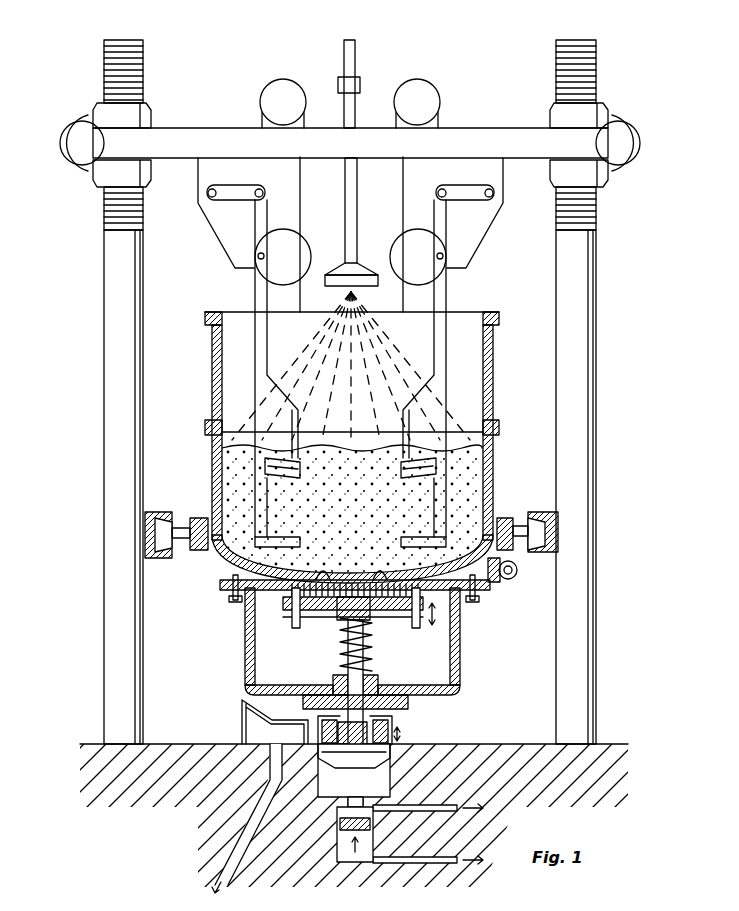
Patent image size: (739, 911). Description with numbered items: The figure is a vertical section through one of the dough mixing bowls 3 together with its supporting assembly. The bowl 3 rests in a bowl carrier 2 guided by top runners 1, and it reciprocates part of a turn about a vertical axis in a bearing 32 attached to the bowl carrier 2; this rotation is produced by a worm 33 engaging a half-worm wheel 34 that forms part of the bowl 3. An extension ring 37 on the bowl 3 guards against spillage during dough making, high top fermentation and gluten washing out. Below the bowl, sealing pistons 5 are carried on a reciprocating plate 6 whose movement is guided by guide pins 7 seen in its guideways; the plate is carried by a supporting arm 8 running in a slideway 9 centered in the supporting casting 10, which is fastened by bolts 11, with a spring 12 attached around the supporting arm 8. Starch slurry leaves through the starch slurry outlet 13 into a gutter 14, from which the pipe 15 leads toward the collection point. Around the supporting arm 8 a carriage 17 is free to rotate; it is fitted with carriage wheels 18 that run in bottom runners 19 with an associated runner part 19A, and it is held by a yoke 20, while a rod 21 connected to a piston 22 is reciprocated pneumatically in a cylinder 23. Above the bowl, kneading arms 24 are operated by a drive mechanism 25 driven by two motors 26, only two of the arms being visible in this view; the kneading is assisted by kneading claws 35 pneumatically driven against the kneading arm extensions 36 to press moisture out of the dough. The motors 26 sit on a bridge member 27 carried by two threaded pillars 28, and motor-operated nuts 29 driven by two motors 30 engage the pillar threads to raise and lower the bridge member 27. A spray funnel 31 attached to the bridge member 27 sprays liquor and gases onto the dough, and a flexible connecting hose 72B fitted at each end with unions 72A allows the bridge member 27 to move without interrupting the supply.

The top runners 1 is at (160, 512).
The bowl carrier 2 is at (182, 528).
The mixing bowl 3 is at (494, 466).
The sealing pistons 5 is at (325, 577).
The reciprocating plate 6 is at (387, 611).
The guide pins 7 is at (294, 629).
The supporting arm 8 is at (370, 643).
The slideway 9 is at (372, 683).
The supporting casting 10 is at (460, 661).
The bolts 11 is at (474, 602).
The spring 12 is at (340, 650).
The starch slurry outlet 13 is at (304, 702).
The gutter 14 is at (242, 712).
The drain tube 15 is at (229, 887).
The carriage 17 is at (367, 728).
The carriage wheels 18 is at (393, 734).
The bottom runners 19 is at (326, 721).
The bearing seat 19A is at (392, 748).
The yoke 20 is at (388, 760).
The rod 21 is at (358, 780).
The piston 22 is at (338, 822).
The cylinder 23 is at (374, 850).
The kneading arms 24 is at (255, 297).
The drive mechanism 25 is at (222, 225).
The motors 26 is at (264, 92).
The bridge member 27 is at (492, 128).
The threaded pillars 28 is at (104, 278).
The motor-operated nuts 29 is at (150, 110).
The motors 30 is at (87, 160).
The spray funnel 31 is at (353, 235).
The bearing 32 is at (200, 550).
The worm 33 is at (517, 577).
The half-worm wheel 34 is at (495, 585).
The kneading claws 35 is at (294, 477).
The kneading arm extensions 36 is at (312, 532).
The extension rings 37 is at (495, 386).
The unions 72A is at (360, 85).
The flexible connecting hose 72B is at (352, 44).